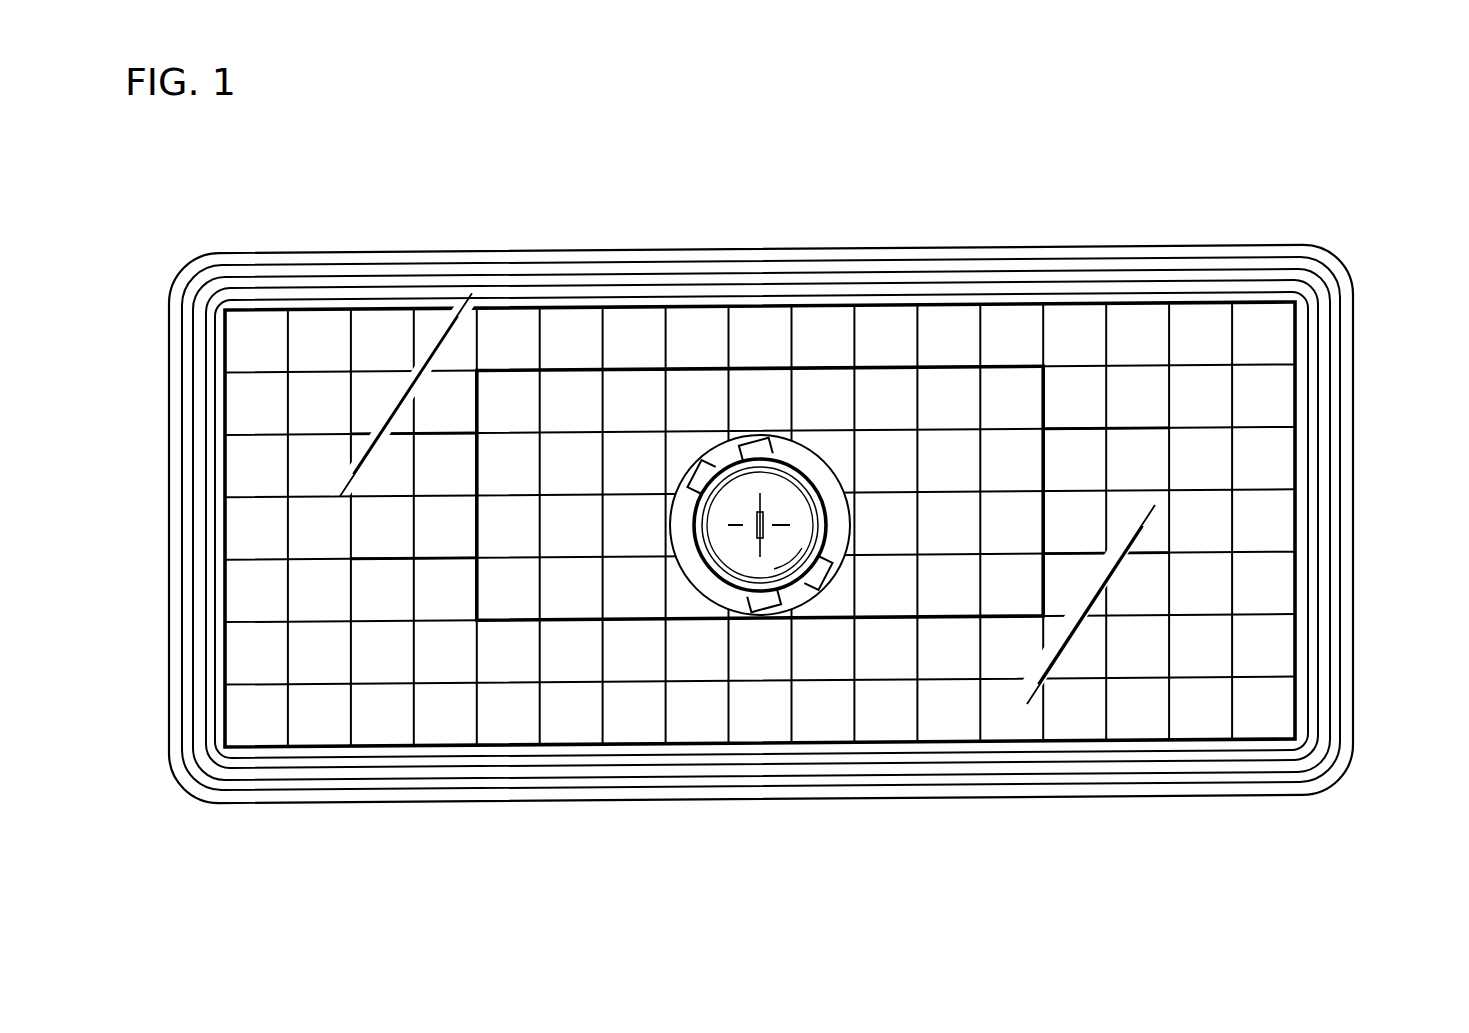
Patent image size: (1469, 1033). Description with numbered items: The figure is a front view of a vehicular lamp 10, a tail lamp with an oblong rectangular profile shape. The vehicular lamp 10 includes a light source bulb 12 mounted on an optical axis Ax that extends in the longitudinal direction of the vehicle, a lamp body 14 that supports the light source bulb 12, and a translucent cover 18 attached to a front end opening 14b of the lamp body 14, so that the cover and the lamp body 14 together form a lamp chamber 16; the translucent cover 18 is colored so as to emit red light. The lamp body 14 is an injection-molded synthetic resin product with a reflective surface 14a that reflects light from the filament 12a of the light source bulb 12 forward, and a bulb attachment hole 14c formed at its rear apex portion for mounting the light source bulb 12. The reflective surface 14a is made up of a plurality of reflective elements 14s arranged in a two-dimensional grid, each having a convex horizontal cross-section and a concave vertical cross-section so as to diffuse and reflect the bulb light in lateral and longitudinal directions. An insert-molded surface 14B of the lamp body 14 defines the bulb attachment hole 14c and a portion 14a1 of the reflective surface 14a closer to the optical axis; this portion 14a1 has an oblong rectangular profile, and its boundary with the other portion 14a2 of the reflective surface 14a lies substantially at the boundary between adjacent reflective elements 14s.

The vehicular lamp 10 is at (1277, 217).
The light source bulb 12 is at (817, 487).
The filament 12a is at (765, 520).
The lamp body 14 is at (832, 248).
The translucent cover 18 is at (761, 524).
The reflective surface 14a is at (1187, 203).
The portion closer to the optical axis 14a1 is at (935, 395).
The other portion 14a2 is at (1140, 395).
The insert-molded surface 14B is at (645, 372).
The front end opening 14b is at (1325, 602).
The bulb attachment hole 14c is at (788, 483).
The reflective element 14s is at (938, 720).
The lamp chamber 16 is at (591, 540).
The optical axis Ax is at (752, 535).